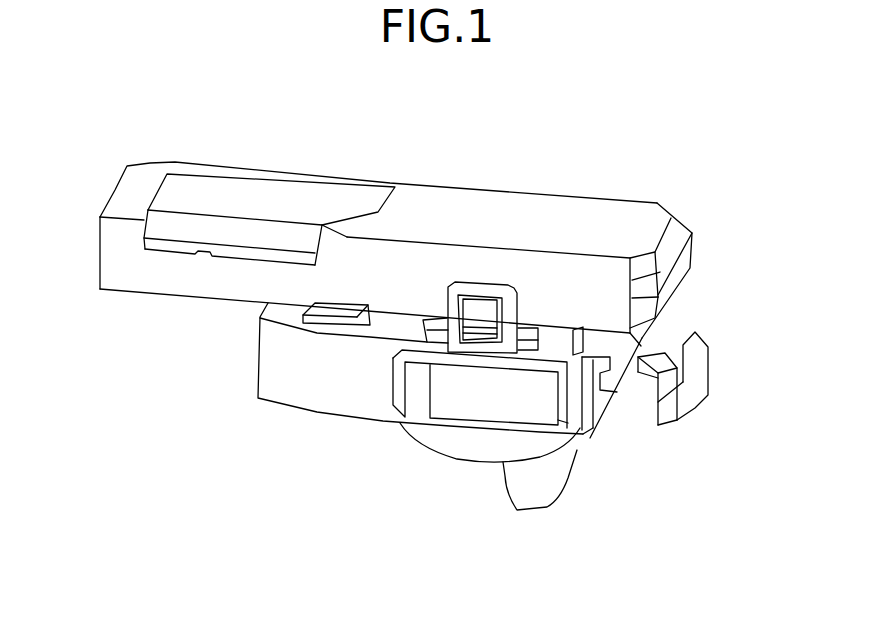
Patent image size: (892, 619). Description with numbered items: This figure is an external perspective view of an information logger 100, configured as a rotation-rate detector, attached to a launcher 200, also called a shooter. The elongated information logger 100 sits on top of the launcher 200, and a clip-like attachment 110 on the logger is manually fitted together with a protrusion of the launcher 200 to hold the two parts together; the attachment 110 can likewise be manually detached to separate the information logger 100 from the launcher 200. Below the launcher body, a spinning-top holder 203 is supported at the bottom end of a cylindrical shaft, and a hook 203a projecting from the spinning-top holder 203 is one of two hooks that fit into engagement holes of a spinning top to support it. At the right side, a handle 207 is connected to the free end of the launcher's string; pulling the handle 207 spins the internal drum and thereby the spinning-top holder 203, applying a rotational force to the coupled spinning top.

The information logger 100 is at (472, 181).
The attachment 110 is at (505, 284).
The launcher 200 is at (278, 413).
The spinning-top holder 203 is at (465, 447).
The hook 203a is at (545, 475).
The handle 207 is at (688, 370).